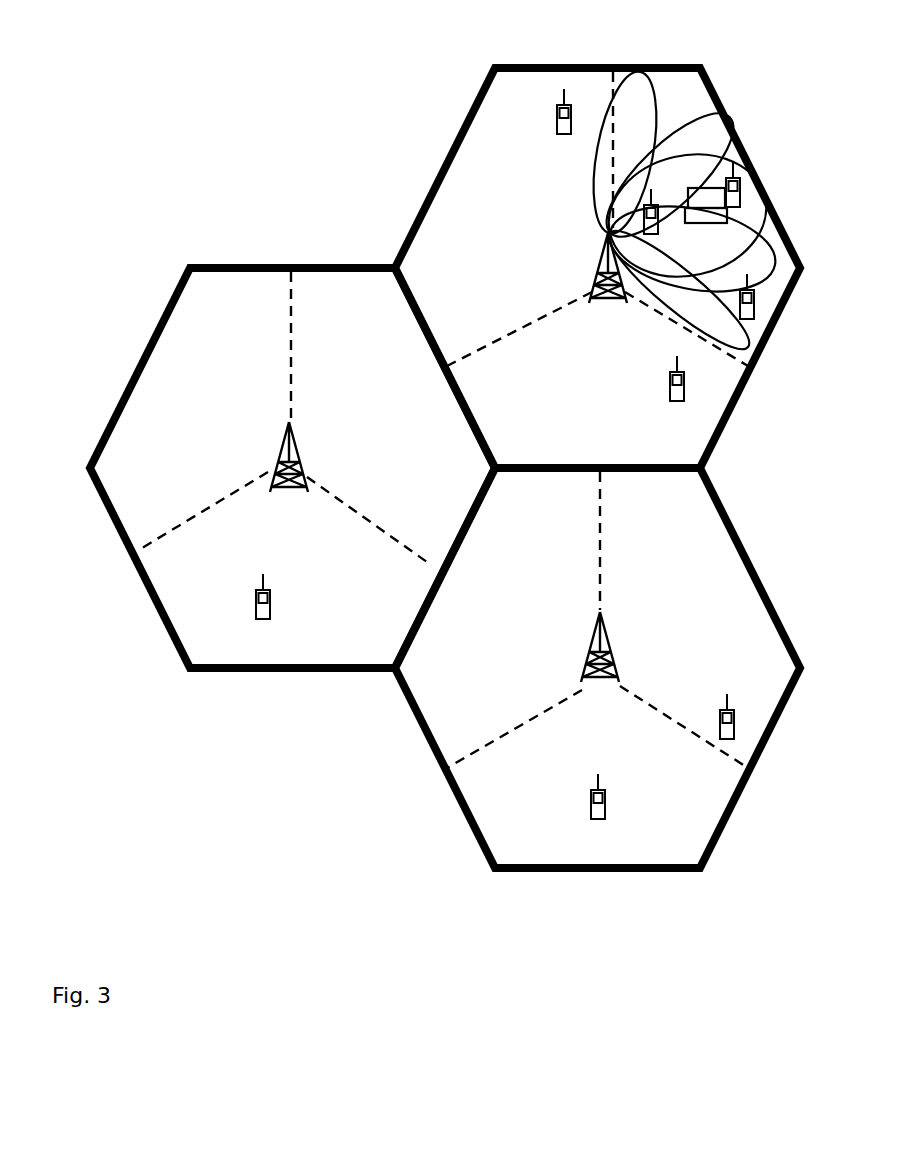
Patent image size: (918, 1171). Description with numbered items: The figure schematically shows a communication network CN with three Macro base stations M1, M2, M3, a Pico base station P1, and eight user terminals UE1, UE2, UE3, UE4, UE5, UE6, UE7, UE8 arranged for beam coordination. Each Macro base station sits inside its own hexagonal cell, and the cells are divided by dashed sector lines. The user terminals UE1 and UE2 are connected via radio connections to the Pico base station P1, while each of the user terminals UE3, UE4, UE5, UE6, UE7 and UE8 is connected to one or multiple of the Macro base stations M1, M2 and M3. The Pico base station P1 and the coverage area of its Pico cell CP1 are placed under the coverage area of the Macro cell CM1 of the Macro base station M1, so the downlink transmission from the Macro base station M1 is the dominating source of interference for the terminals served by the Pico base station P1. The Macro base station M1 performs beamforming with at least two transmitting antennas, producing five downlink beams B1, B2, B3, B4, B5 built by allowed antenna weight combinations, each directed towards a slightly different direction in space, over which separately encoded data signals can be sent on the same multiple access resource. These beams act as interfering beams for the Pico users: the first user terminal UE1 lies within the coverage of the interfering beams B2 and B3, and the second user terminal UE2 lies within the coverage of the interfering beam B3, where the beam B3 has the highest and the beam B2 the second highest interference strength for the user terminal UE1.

The communication network CN is at (445, 454).
The coverage area of the Macro base station CM1 is at (451, 148).
The Pico cell CP1 is at (663, 138).
The Macro base station M1 is at (607, 285).
The Macro base station M2 is at (600, 668).
The Macro base station M3 is at (291, 478).
The Pico base station P1 is at (706, 224).
The downlink beam B1 is at (624, 141).
The downlink beam B2 is at (673, 175).
The downlink beam B3 is at (695, 215).
The downlink beam B4 is at (694, 249).
The downlink beam B5 is at (678, 296).
The user terminal UE1 is at (661, 231).
The user terminal UE2 is at (703, 183).
The user terminal UE3 is at (534, 112).
The user terminal UE4 is at (646, 380).
The user terminal UE5 is at (719, 297).
The user terminal UE6 is at (729, 699).
The user terminal UE7 is at (566, 796).
The user terminal UE8 is at (234, 599).